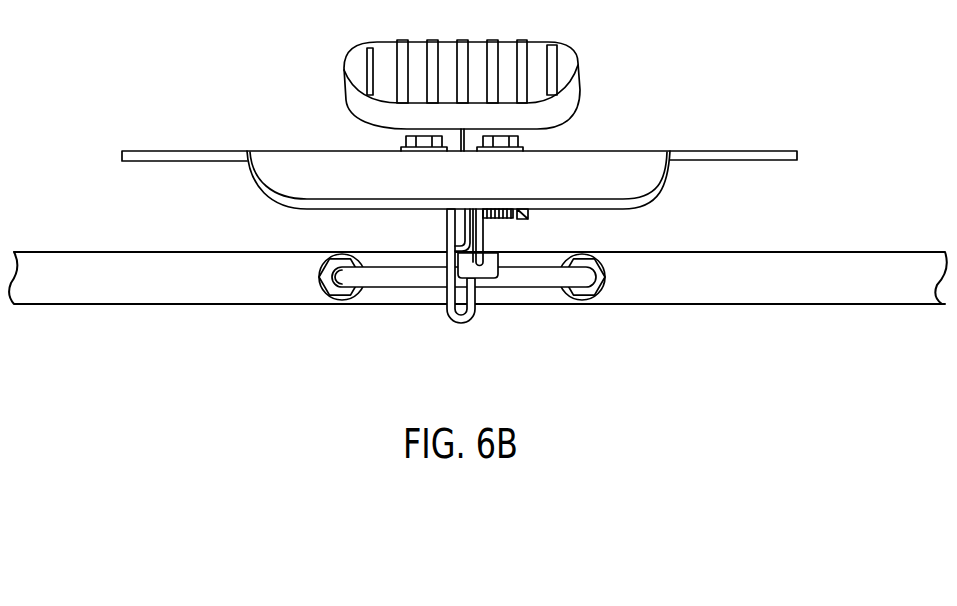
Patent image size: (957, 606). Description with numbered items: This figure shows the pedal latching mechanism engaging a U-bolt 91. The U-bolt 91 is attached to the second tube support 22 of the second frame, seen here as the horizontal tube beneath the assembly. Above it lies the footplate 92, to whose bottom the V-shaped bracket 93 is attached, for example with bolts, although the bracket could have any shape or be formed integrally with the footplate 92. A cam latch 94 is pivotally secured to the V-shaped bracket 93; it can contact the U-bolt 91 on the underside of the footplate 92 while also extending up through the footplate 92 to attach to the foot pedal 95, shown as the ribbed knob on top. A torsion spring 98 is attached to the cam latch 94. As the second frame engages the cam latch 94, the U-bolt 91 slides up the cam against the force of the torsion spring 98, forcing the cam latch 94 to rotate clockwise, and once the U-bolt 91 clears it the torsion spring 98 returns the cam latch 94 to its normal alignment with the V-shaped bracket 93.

The second tube support 22 is at (690, 250).
The U-bolt 91 is at (528, 280).
The footplate 92 is at (698, 150).
The V-shaped bracket 93 is at (448, 248).
The cam latch 94 is at (502, 244).
The foot pedal 95 is at (563, 50).
The torsion spring 98 is at (528, 213).